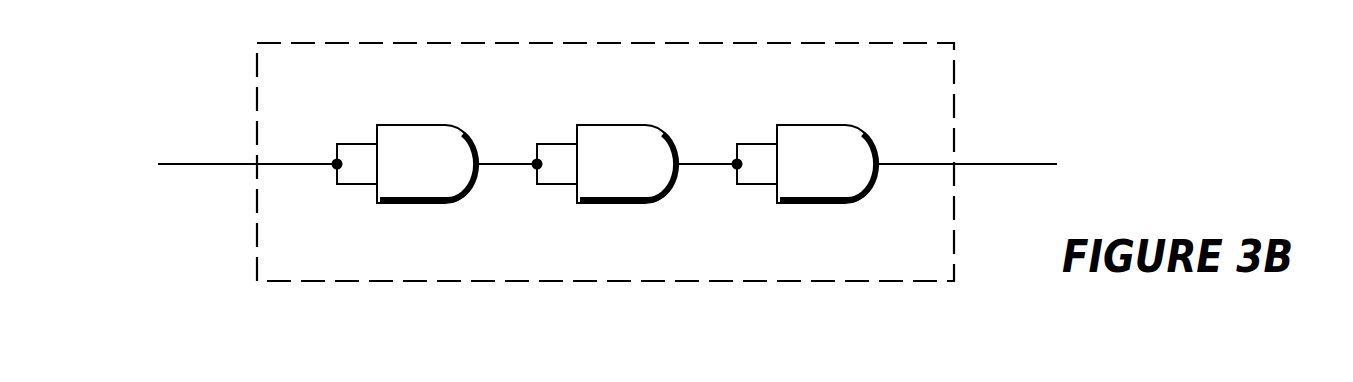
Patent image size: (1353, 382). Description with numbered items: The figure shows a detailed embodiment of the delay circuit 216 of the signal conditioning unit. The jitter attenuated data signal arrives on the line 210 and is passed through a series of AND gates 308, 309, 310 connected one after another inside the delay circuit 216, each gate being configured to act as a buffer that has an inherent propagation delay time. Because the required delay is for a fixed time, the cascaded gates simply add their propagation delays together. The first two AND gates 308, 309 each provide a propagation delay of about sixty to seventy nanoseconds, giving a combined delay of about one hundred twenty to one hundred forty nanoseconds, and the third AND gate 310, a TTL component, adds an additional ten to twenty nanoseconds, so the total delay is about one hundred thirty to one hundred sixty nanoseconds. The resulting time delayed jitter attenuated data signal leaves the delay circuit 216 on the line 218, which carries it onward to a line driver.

The line 210 is at (200, 163).
The delay circuit 216 is at (577, 283).
The line 218 is at (997, 158).
The AND gate 308 is at (395, 123).
The AND gate 309 is at (597, 123).
The third AND gate 310 is at (797, 122).